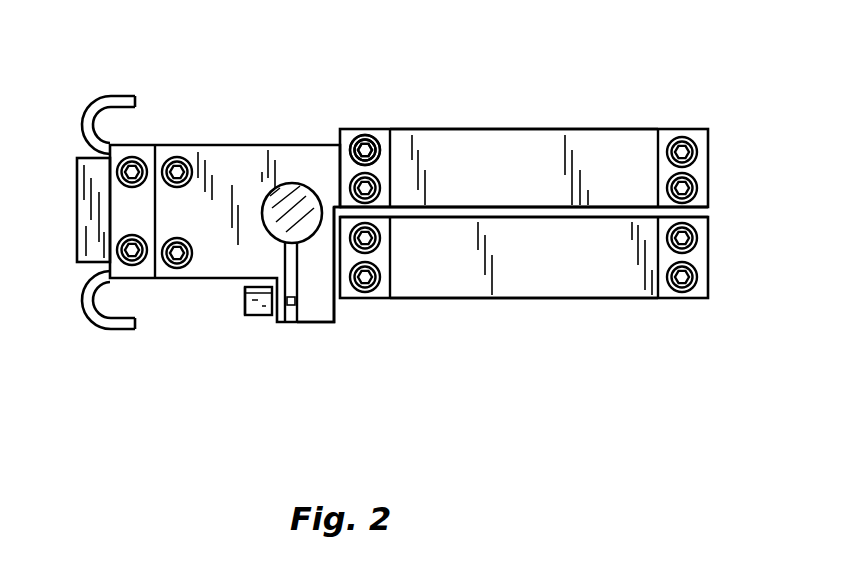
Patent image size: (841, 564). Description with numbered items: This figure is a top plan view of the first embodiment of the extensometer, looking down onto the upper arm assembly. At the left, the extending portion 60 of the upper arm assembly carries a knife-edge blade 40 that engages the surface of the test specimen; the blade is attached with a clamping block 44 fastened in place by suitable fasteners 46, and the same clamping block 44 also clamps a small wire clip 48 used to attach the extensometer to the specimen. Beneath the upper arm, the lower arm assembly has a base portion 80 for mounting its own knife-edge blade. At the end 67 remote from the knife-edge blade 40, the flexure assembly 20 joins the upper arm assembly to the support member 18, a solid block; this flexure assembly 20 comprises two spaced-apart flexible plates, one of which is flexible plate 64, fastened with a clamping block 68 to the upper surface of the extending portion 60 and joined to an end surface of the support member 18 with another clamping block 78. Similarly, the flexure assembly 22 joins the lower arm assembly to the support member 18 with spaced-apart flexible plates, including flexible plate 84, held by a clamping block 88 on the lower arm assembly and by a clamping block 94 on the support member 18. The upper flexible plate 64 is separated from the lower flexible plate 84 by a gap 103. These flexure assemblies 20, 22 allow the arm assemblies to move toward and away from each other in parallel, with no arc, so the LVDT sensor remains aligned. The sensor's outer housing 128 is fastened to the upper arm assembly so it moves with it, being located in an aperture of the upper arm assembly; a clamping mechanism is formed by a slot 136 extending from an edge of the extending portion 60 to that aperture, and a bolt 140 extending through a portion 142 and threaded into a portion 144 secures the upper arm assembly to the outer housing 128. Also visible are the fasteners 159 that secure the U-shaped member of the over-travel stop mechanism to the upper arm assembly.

The support member 18 is at (708, 207).
The flexure assembly 20 is at (612, 113).
The flexure assembly 22 is at (530, 315).
The knife-edge blade 40 is at (77, 158).
The clamping block 44 is at (132, 157).
The fasteners 46 is at (135, 240).
The wire clip 48 is at (112, 96).
The extending portion 60 is at (200, 143).
The flexible plate 64 is at (502, 128).
The end 67 is at (430, 120).
The clamping block 68 is at (362, 128).
The clamping block 78 is at (708, 153).
The base portion 80 is at (367, 157).
The flexible plate 84 is at (608, 300).
The clamping block 88 is at (368, 300).
The clamping block 94 is at (708, 257).
The gap 103 is at (513, 207).
The outer housing 128 is at (300, 185).
The slot 136 is at (288, 323).
The bolt 140 is at (243, 297).
The portion 142 is at (272, 323).
The portion 144 is at (317, 323).
The fasteners 159 is at (193, 173).